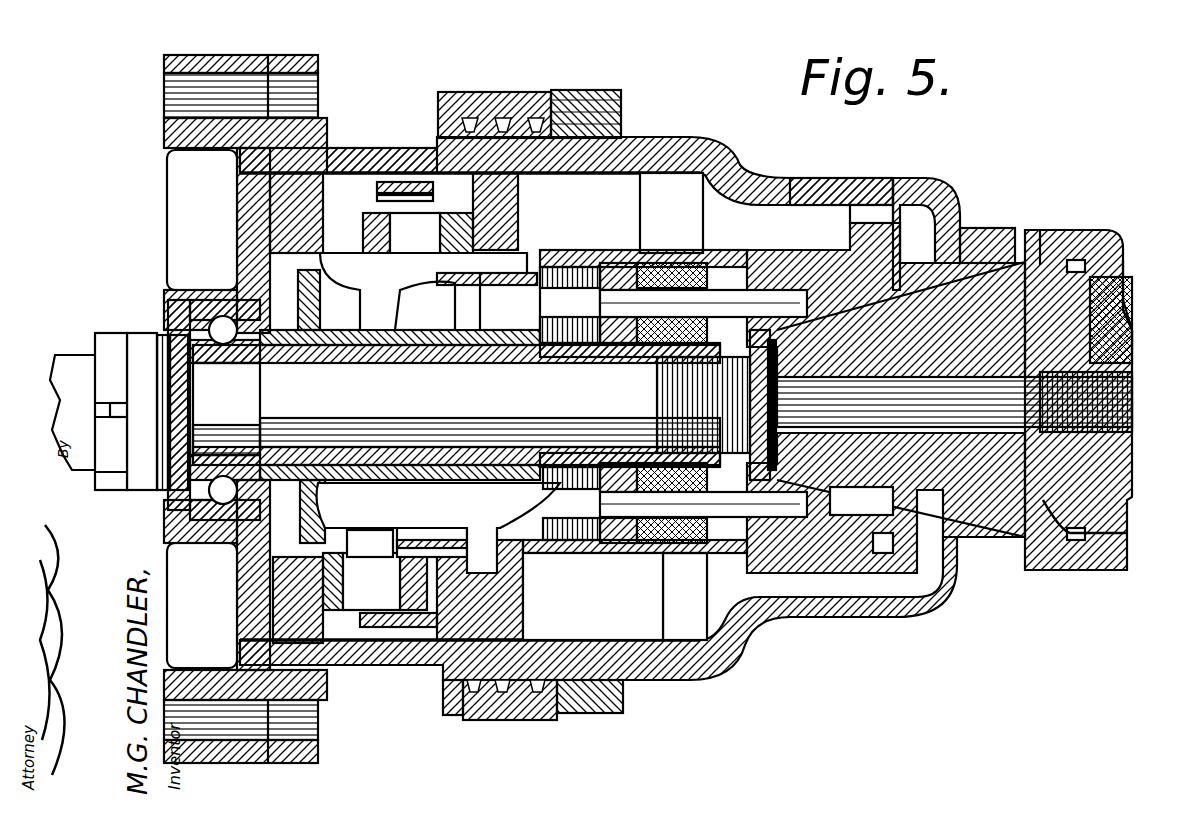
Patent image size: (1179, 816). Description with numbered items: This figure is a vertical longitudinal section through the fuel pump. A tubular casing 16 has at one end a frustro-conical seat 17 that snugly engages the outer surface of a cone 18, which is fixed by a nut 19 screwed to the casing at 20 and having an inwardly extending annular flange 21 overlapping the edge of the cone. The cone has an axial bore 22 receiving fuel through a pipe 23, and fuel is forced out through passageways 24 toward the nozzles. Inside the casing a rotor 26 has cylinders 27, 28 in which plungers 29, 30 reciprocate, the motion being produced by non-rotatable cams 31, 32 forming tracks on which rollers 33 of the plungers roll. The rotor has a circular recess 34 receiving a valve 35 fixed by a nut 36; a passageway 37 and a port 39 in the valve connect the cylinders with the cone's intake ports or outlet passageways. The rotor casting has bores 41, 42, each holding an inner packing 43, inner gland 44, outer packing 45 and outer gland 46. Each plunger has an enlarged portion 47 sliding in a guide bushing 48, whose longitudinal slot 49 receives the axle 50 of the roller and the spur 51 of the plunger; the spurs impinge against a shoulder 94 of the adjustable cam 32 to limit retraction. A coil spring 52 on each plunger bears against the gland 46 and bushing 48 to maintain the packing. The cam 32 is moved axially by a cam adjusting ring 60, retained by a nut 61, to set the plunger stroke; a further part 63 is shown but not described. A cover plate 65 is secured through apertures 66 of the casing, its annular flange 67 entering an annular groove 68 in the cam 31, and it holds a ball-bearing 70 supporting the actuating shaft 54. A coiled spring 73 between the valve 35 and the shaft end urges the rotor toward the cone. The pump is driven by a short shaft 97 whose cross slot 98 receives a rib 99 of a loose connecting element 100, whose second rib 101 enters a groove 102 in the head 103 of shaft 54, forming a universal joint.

The tubular casing 16 is at (740, 185).
The frustro-conical seat 17 is at (975, 295).
The cone 18 is at (1130, 300).
The nut 19 is at (1070, 230).
The threaded connection 20 is at (1042, 230).
The inwardly extending annular flange 21 is at (1125, 260).
The axial bore 22 is at (954, 402).
The pipe 23 is at (1035, 380).
The passageway 24 is at (1133, 330).
The rotor 26 is at (800, 190).
The cylinder 27 is at (775, 265).
The cylinder 28 is at (810, 555).
The plunger 29 is at (703, 403).
The plunger 30 is at (760, 615).
The cam 31 is at (335, 200).
The adjustable cam 32 is at (440, 165).
The roller 33 is at (520, 195).
The circular recess 34 is at (865, 205).
The valve 35 is at (965, 228).
The nut 36 is at (920, 195).
The passageway 37 is at (820, 380).
The port 39 is at (861, 520).
The bore 41 is at (650, 262).
The bore 42 is at (650, 553).
The inner packing 43 is at (700, 265).
The inner gland 44 is at (670, 250).
The outer packing 45 is at (640, 262).
The outer gland 46 is at (612, 270).
The enlarged portion 47 is at (438, 413).
The guide bushing 48 is at (345, 345).
The longitudinal slot 49 is at (505, 285).
The axle 50 is at (398, 411).
The spur 51 is at (570, 262).
The coil spring 52 is at (580, 357).
The actuating shaft 54 is at (456, 405).
The cam adjusting ring 60 is at (480, 92).
The nut 61 is at (590, 92).
The lower nut 63 is at (440, 690).
The cover plate 65 is at (164, 66).
The apertures 66 is at (170, 90).
The annular flange 67 is at (250, 183).
The annular groove 68 is at (330, 648).
The ball-bearing 70 is at (168, 520).
The coiled spring 73 is at (657, 405).
The shoulder 94 is at (520, 215).
The short shaft 97 is at (62, 365).
The cross slot 98 is at (118, 410).
The rib 99 is at (118, 425).
The loose connecting element 100 is at (135, 333).
The second rib 101 is at (160, 480).
The groove 102 is at (175, 380).
The head 103 is at (190, 425).